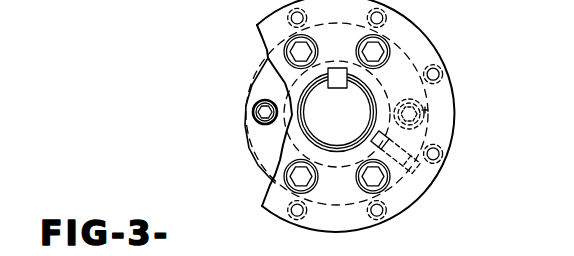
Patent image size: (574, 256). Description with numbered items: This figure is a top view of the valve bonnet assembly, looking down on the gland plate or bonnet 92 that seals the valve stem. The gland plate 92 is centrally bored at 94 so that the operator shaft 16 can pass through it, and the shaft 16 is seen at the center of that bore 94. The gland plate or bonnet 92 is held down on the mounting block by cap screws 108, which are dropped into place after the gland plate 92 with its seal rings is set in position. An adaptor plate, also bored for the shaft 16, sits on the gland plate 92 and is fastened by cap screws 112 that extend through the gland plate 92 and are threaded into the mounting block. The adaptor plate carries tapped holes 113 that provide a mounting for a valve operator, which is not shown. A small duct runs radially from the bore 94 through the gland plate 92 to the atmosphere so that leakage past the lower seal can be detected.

The operator shaft 16 is at (337, 115).
The gland plate or bonnet 92 is at (260, 83).
The central bore 94 is at (357, 117).
The cap screws 108 is at (248, 117).
The cap screws 112 is at (383, 45).
The tapped holes 113 is at (382, 213).